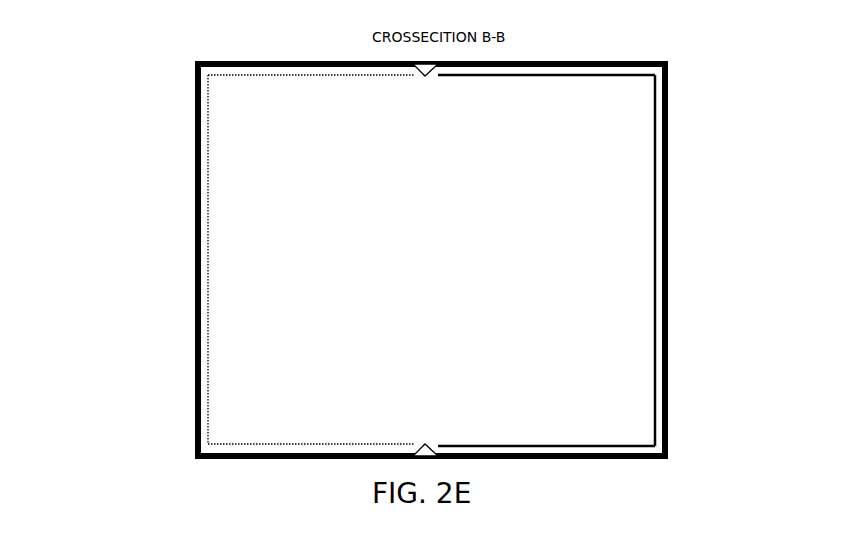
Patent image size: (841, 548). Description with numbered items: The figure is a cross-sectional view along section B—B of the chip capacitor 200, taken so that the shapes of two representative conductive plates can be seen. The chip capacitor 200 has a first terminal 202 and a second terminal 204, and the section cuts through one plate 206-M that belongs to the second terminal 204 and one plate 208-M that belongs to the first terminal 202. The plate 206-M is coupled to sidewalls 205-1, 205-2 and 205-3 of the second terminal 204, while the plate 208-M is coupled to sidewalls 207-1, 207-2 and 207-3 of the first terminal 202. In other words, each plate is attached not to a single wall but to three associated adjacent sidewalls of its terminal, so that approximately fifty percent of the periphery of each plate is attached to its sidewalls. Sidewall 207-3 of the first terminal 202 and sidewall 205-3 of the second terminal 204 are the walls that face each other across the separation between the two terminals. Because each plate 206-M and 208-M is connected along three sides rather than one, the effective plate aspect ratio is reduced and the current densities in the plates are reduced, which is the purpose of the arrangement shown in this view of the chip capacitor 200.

The chip capacitor 200 is at (713, 75).
The first terminal 202 is at (197, 200).
The second terminal 204 is at (668, 342).
The sidewall of the second terminal 205-1 is at (668, 220).
The sidewall of the second terminal 205-2 is at (587, 62).
The second sidewall of the second terminal 205-3 is at (552, 460).
The plate 206-M is at (207, 133).
The sidewall of the first terminal 207-1 is at (197, 283).
The sidewall of the first terminal 207-2 is at (308, 62).
The first sidewall of the first terminal 207-3 is at (277, 460).
The plate 208-M is at (585, 297).